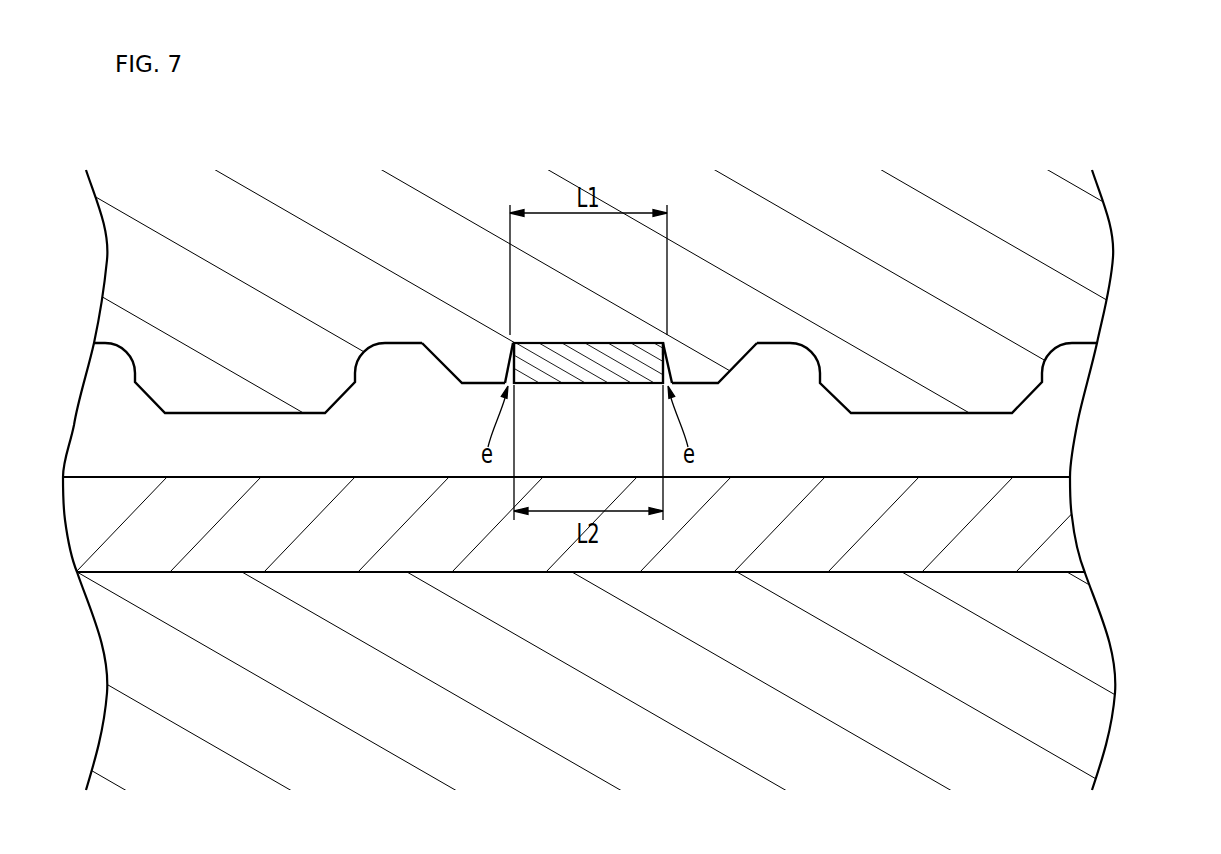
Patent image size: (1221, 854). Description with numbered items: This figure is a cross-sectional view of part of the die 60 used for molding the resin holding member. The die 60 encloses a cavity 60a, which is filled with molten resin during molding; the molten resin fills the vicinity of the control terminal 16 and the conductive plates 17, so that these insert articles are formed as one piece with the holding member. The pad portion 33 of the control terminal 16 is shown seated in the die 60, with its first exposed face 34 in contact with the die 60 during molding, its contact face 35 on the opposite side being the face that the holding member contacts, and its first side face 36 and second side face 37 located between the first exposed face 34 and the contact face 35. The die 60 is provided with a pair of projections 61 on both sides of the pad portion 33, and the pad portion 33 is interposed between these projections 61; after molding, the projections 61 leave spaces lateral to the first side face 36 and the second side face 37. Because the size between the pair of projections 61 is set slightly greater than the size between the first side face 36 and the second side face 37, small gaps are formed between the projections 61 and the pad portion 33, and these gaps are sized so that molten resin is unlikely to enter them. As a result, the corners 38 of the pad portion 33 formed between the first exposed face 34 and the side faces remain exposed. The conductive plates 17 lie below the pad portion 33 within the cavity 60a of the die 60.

The control terminal 16 is at (620, 343).
The conductive plate 17 is at (1048, 523).
The pad portion 33 is at (588, 358).
The first exposed face 34 is at (556, 343).
The contact face 35 is at (603, 385).
The first side face 36 is at (505, 374).
The second side face 37 is at (672, 374).
The corner 38 is at (513, 343).
The die 60 is at (1083, 252).
The cavity 60a is at (1038, 443).
The projection 61 is at (475, 370).